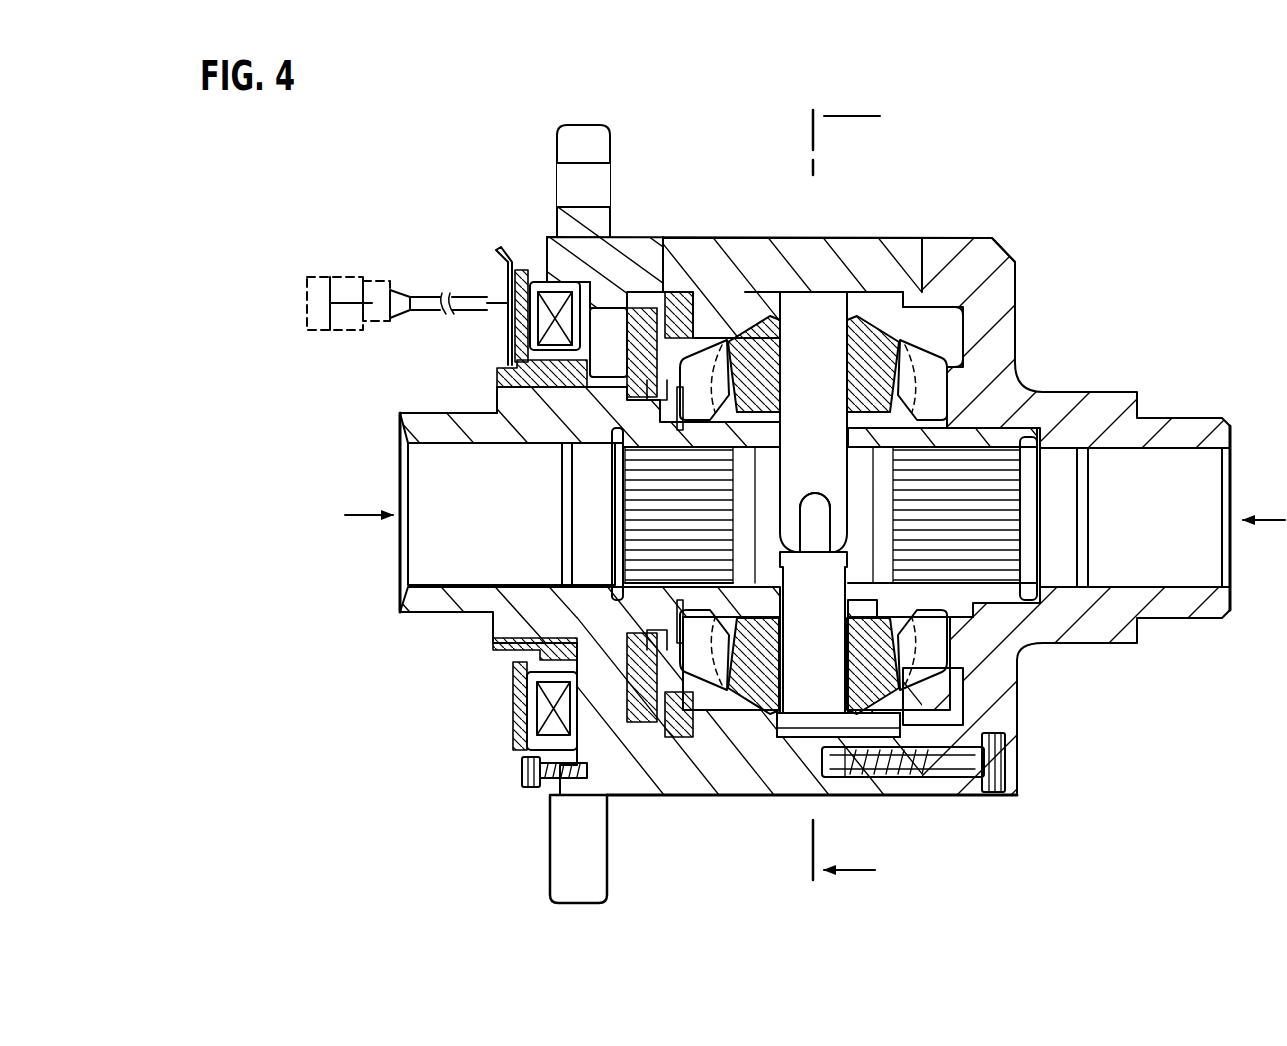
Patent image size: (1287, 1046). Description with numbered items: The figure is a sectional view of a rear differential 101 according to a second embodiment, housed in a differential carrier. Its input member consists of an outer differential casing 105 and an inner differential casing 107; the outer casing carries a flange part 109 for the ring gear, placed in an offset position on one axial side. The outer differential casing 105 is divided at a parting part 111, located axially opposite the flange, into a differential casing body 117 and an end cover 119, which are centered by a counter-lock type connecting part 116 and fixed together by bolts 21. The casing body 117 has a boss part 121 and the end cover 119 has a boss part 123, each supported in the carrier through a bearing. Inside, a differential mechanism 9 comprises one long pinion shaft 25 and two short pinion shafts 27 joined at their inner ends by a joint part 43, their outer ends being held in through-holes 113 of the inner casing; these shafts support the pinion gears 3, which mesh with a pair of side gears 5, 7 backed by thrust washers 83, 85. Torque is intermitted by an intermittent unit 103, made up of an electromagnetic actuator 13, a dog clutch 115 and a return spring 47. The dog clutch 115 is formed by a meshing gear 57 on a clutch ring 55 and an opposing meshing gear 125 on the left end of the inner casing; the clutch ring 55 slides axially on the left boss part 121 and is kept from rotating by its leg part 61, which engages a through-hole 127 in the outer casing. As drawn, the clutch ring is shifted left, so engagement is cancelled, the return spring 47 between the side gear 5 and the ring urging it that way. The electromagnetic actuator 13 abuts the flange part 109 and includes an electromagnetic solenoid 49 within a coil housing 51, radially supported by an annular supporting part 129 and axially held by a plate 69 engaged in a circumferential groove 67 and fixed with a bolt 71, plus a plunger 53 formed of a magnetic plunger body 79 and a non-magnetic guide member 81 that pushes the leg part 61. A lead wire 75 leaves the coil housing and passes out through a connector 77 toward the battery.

The rear differential 101 is at (1058, 100).
The intermittent unit 103 is at (478, 152).
The outer differential casing 105 is at (968, 193).
The inner differential casing 107 is at (747, 285).
The flange part 109 is at (578, 135).
The parting part 111 is at (912, 235).
The through-holes 113 is at (784, 306).
The dog clutch 115 is at (722, 255).
The counter-lock type connecting part 116 is at (1015, 283).
The differential casing body 117 is at (860, 235).
The end cover 119 is at (1004, 242).
The boss part 121 is at (445, 626).
The boss part 123 is at (1185, 625).
The meshing gear 125 is at (692, 292).
The through-hole 127 is at (604, 298).
The annular supporting part 129 is at (600, 291).
The pinion gears 3 is at (783, 380).
The side gear 5 is at (770, 447).
The side gear 7 is at (1015, 340).
The differential mechanism 9 is at (697, 803).
The electromagnetic actuator 13 is at (512, 244).
The bolts 21 is at (988, 797).
The long pinion shaft 25 is at (833, 440).
The short pinion shafts 27 is at (833, 615).
The joint part 43 is at (834, 493).
The return spring 47 is at (627, 426).
The electromagnetic solenoid 49 is at (550, 723).
The coil housing 51 is at (517, 697).
The plunger 53 is at (466, 360).
The clutch ring 55 is at (637, 303).
The meshing gear 57 is at (652, 298).
The leg part 61 is at (625, 353).
The circumferential groove 67 is at (498, 262).
The plate 69 is at (547, 793).
The bolt 71 is at (523, 776).
The lead wire 75 is at (420, 295).
The connector 77 is at (345, 275).
The plunger body 79 is at (512, 348).
The guide member 81 is at (497, 380).
The thrust washer 83 is at (613, 567).
The thrust washer 85 is at (1030, 570).